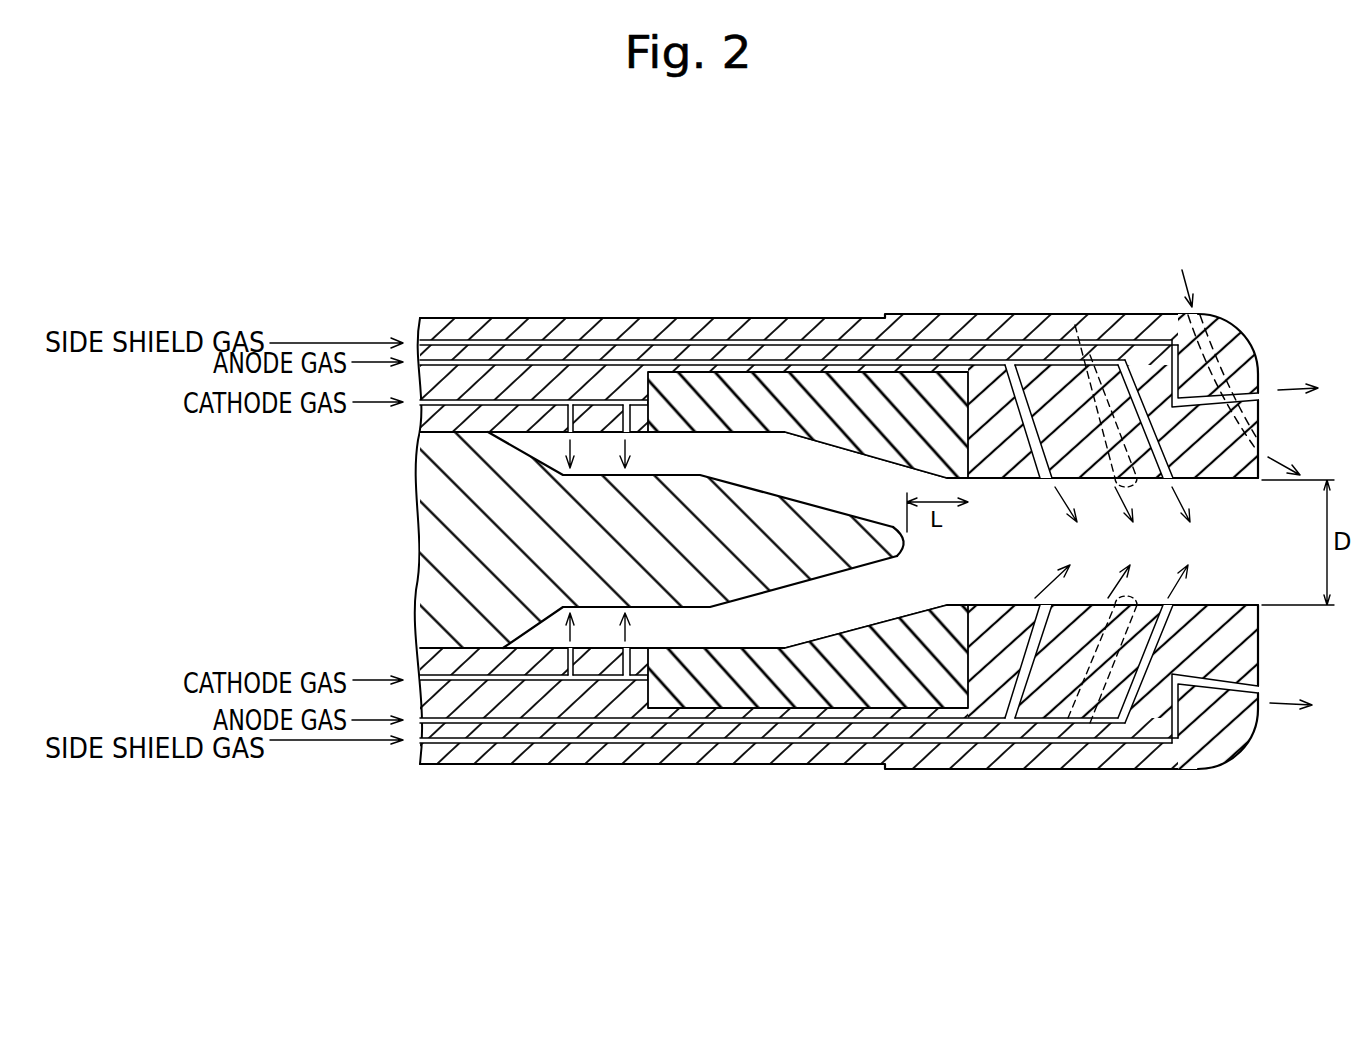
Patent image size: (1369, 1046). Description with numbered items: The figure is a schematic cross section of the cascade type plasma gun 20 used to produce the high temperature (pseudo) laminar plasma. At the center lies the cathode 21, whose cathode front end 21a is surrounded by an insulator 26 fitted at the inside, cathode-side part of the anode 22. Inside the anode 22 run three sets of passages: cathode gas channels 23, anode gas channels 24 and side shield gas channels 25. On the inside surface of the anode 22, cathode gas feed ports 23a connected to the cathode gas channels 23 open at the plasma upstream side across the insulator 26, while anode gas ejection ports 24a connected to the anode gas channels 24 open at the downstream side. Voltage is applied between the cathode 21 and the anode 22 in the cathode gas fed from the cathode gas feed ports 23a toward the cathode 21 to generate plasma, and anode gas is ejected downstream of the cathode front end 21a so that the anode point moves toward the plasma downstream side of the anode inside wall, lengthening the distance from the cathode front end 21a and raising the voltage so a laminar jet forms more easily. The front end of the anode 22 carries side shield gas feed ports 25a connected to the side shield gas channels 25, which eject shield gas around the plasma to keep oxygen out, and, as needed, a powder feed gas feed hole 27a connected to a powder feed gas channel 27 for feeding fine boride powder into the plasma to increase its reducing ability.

The plasma gun 20 is at (1220, 195).
The cathode 21 is at (422, 526).
The cathode front end 21a is at (908, 546).
The anode 22 is at (1035, 327).
The cathode gas channels 23 is at (480, 395).
The cathode gas feed ports 23a is at (580, 432).
The anode gas channels 24 is at (512, 358).
The anode gas ejection ports 24a is at (1055, 478).
The side shield gas channels 25 is at (702, 345).
The side shield gas feed ports 25a is at (1260, 388).
The insulator 26 is at (802, 407).
The powder feed gas channel 27 is at (1218, 357).
The powder feed gas feed hole 27a is at (1263, 450).